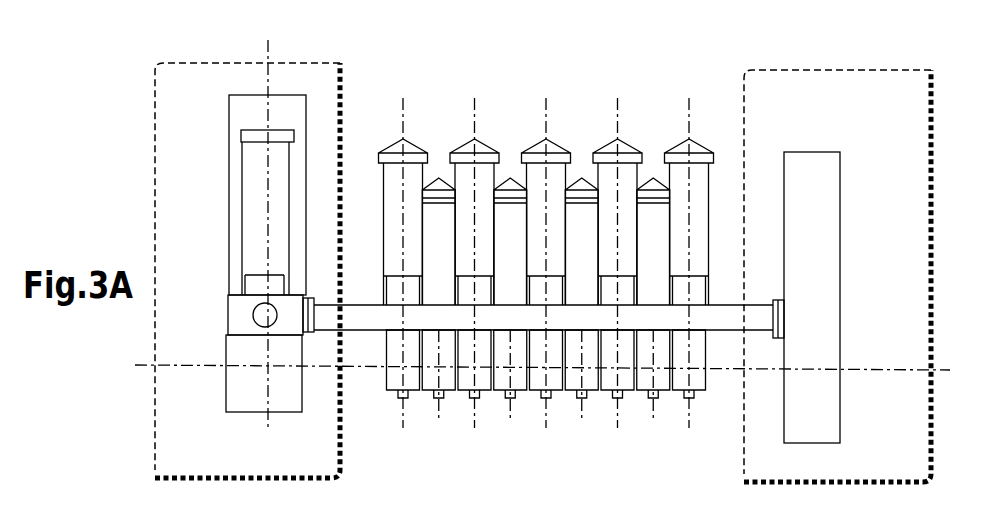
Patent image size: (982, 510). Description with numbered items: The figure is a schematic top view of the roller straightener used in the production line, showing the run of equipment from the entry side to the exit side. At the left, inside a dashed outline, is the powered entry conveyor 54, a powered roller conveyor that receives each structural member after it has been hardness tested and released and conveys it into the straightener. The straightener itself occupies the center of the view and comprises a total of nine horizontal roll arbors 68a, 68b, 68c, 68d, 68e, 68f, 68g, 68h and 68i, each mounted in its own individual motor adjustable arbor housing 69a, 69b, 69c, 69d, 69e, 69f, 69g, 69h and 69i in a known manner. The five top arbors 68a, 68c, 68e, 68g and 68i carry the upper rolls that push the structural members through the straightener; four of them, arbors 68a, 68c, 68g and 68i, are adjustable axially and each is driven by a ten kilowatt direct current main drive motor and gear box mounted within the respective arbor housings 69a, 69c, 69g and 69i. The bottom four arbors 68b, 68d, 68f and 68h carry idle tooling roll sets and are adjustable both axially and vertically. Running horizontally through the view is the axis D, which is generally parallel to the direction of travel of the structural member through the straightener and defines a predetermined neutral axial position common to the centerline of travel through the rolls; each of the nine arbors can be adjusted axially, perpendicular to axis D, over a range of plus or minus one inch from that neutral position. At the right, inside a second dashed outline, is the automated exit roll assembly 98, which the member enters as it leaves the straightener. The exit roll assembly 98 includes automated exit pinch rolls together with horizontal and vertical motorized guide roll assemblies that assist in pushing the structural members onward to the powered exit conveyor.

The entry conveyor 54 is at (200, 63).
The exit roll assembly 98 is at (825, 70).
The axis D is at (893, 368).
The arbor housing 69a is at (397, 141).
The arbor housing 69b is at (437, 179).
The arbor housing 69c is at (472, 141).
The arbor housing 69d is at (506, 181).
The arbor housing 69e is at (542, 142).
The arbor housing 69f is at (579, 184).
The arbor housing 69g is at (612, 142).
The arbor housing 69h is at (654, 183).
The arbor housing 69i is at (700, 144).
The horizontal roll arbor 68a is at (395, 400).
The horizontal roll arbor 68b is at (436, 400).
The horizontal roll arbor 68c is at (470, 400).
The horizontal roll arbor 68d is at (506, 400).
The horizontal roll arbor 68e is at (541, 400).
The horizontal roll arbor 68f is at (578, 400).
The horizontal roll arbor 68g is at (612, 400).
The horizontal roll arbor 68h is at (650, 400).
The horizontal roll arbor 68i is at (687, 400).